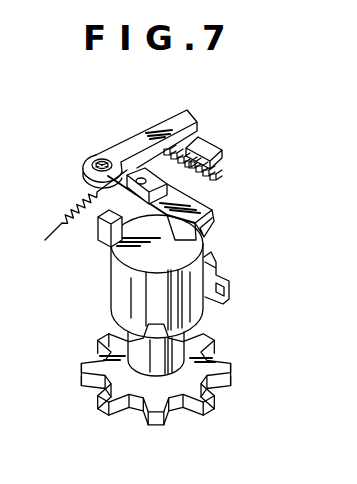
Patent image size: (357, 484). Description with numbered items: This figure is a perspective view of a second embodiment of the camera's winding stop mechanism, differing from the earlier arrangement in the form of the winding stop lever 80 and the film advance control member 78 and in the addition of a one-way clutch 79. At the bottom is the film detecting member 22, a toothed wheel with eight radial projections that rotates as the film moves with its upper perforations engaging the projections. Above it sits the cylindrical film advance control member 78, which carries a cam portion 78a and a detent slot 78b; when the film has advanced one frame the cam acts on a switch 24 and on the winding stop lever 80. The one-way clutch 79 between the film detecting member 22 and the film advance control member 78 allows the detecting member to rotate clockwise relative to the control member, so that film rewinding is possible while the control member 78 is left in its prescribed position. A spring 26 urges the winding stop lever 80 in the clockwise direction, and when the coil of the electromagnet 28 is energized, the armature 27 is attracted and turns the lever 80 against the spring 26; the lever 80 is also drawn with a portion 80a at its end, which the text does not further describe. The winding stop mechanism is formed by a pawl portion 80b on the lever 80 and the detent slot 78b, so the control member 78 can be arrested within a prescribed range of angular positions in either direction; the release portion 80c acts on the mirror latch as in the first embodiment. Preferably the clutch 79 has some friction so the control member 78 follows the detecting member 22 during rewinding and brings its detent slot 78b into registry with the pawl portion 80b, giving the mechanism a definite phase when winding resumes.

The film detecting member 22 is at (138, 392).
The switch 24 is at (103, 237).
The spring 26 is at (70, 213).
The armature 27 is at (139, 175).
The electromagnet 28 is at (204, 140).
The film advance control member 78 is at (115, 307).
The cam portion 78a is at (210, 303).
The detent slot 78b is at (203, 230).
The one-way clutch 79 is at (213, 365).
The winding stop lever 80 is at (173, 198).
The hole 80a is at (101, 159).
The pawl portion 80b is at (197, 210).
The release portion 80c is at (175, 112).